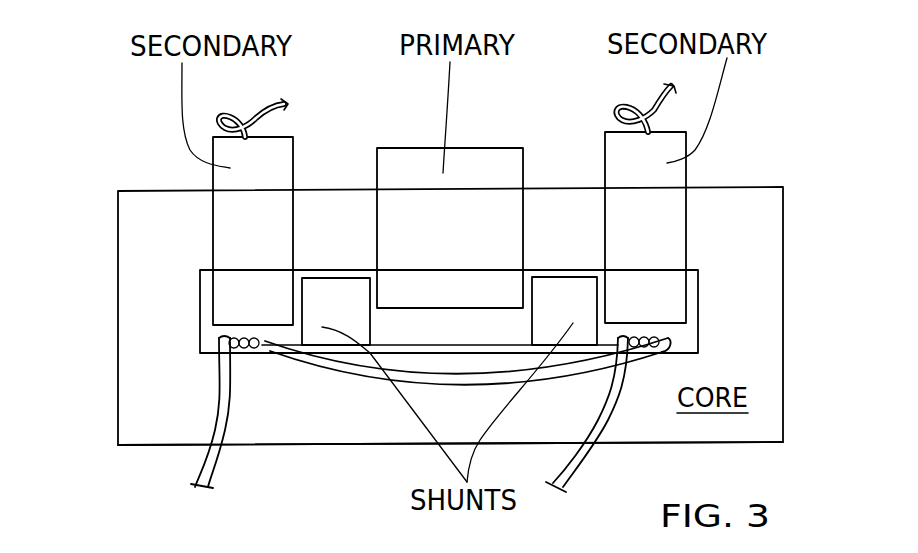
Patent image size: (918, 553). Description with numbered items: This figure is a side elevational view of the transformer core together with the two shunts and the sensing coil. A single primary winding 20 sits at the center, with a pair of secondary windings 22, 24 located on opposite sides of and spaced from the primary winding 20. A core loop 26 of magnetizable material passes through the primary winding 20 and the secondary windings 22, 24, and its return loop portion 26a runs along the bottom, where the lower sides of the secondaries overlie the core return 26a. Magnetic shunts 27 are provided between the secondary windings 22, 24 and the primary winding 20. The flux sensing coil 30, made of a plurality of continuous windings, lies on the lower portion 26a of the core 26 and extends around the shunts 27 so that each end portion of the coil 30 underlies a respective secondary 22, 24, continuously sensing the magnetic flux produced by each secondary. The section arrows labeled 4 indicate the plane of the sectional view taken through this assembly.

The primary winding 20 is at (469, 252).
The secondary winding 22 is at (265, 251).
The secondary winding 24 is at (661, 253).
The core loop 26 is at (152, 225).
The return loop portion 26a is at (282, 412).
The magnetic shunts 27 is at (332, 305).
The flux sensing coil 30 is at (658, 340).
The section line 4- 4 is at (143, 333).